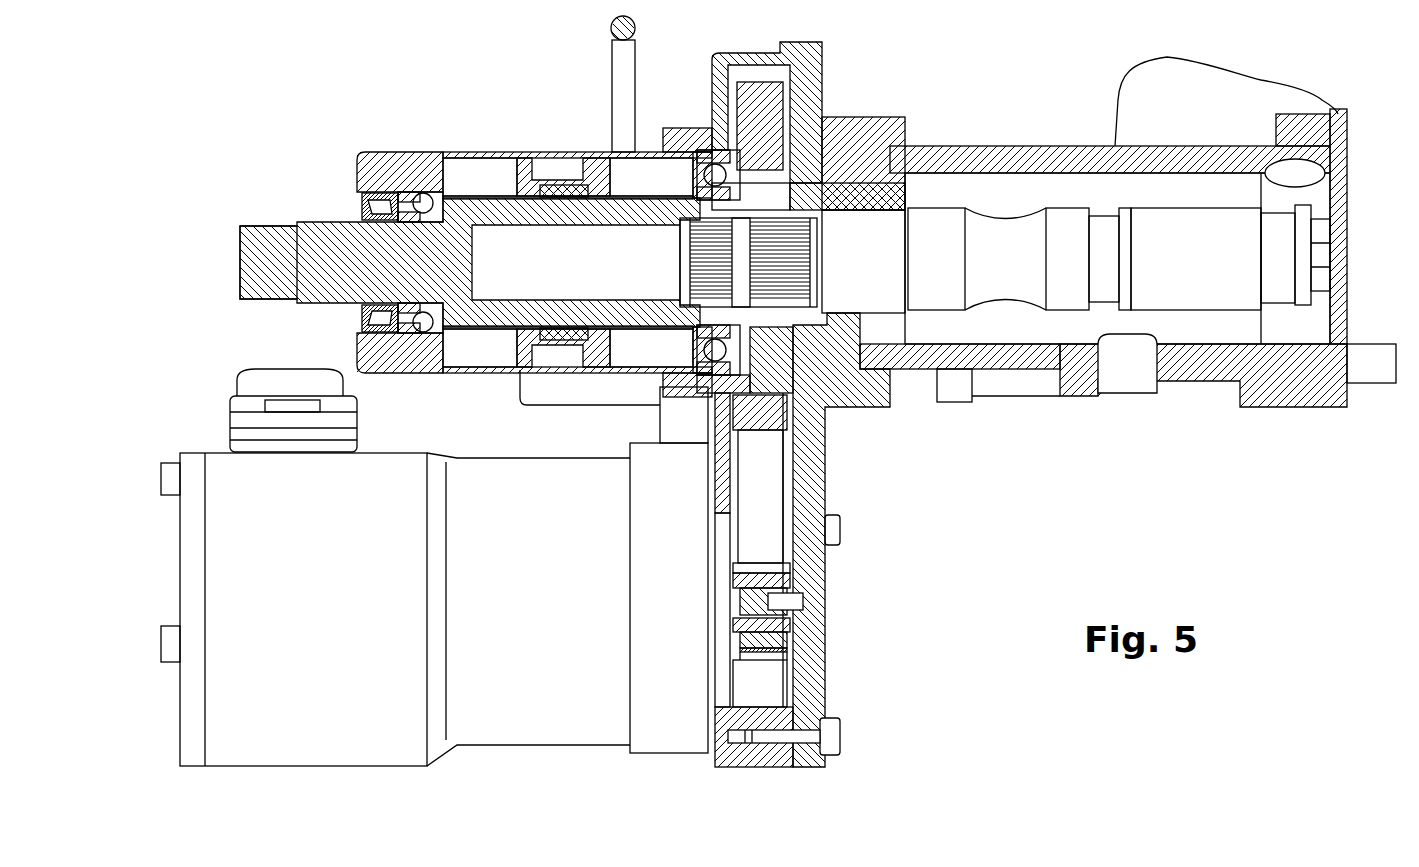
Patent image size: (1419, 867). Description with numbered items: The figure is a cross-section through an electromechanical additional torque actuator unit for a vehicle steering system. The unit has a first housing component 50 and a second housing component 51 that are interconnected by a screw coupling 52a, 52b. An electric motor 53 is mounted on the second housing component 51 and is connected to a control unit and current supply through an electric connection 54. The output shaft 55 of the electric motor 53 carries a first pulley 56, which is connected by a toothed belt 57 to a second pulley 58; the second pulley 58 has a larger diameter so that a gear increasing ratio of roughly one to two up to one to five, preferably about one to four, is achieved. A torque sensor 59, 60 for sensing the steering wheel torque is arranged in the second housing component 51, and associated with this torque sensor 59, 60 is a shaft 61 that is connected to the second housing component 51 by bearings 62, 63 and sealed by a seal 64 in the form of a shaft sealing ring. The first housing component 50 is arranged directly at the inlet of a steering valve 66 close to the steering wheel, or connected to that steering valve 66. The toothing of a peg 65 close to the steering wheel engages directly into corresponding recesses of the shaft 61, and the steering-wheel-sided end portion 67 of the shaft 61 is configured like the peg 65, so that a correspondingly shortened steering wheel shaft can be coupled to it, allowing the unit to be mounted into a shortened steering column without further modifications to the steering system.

The first housing component 50 is at (815, 440).
The second housing component 51 is at (725, 752).
The screw coupling 52a is at (833, 738).
The screw coupling 52b is at (835, 528).
The electric motor 53 is at (302, 721).
The electric connection 54 is at (343, 397).
The output shaft 55 is at (773, 600).
The first pulley 56 is at (780, 638).
The toothed belt 57 is at (770, 540).
The second pulley 58 is at (740, 92).
The torque sensor 59 is at (528, 180).
The torque sensor 60 is at (567, 185).
The shaft 61 is at (377, 273).
The bearing 62 is at (712, 160).
The bearing 63 is at (410, 192).
The seal 64 is at (362, 200).
The peg 65 is at (800, 227).
The steering valve 66 is at (1169, 374).
The steering-wheel-sided end portion 67 is at (257, 292).